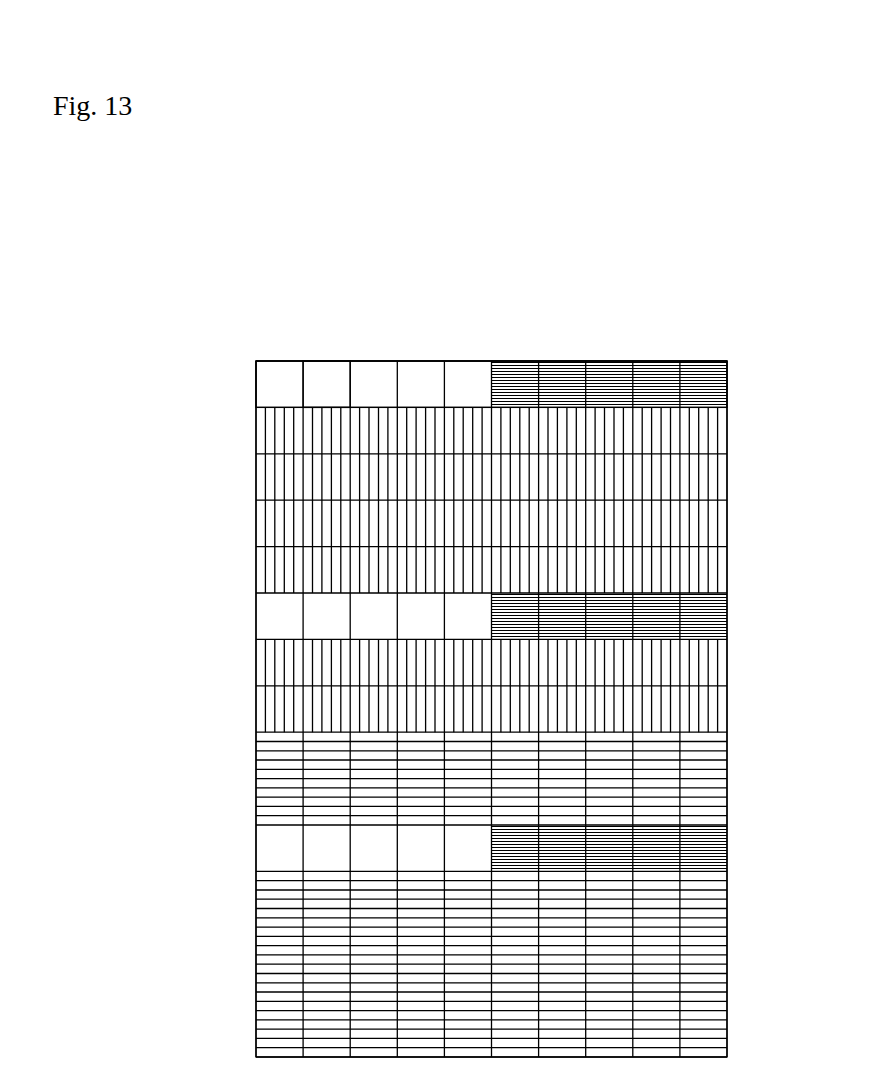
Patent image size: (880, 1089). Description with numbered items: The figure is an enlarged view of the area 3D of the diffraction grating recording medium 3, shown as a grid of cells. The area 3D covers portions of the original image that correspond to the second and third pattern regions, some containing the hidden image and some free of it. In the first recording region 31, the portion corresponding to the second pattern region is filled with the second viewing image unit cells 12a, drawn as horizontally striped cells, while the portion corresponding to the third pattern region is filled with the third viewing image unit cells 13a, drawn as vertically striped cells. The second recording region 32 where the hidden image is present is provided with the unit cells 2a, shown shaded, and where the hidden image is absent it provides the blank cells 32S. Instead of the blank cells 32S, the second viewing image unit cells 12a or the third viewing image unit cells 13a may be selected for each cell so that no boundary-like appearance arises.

The diffraction grating recording medium 3 is at (636, 259).
The area 3D is at (725, 330).
The first recording region 31 is at (730, 466).
The second recording region 32 is at (424, 350).
The blank cells 32S is at (322, 370).
The unit cells 2a is at (612, 360).
The third viewing image unit cells 13a is at (268, 478).
The second viewing image unit cells 12a is at (712, 803).